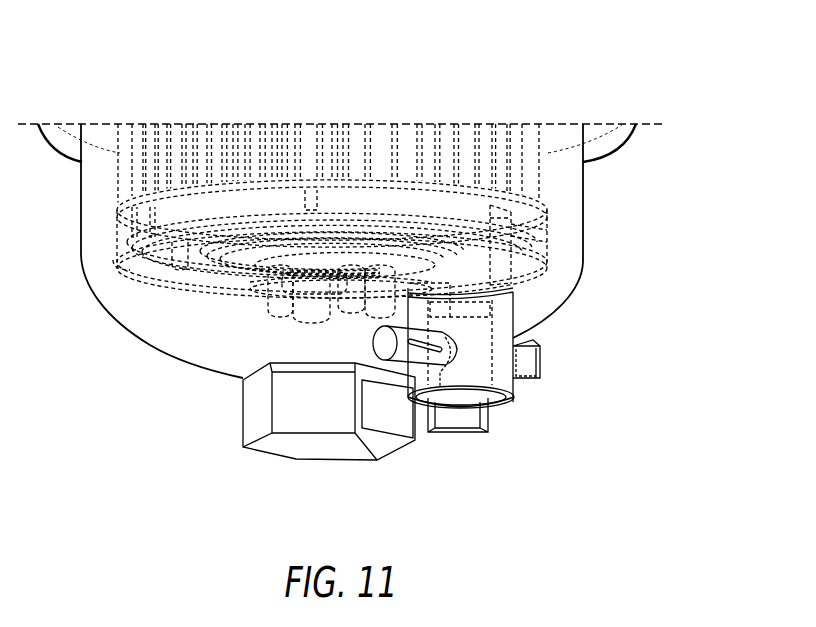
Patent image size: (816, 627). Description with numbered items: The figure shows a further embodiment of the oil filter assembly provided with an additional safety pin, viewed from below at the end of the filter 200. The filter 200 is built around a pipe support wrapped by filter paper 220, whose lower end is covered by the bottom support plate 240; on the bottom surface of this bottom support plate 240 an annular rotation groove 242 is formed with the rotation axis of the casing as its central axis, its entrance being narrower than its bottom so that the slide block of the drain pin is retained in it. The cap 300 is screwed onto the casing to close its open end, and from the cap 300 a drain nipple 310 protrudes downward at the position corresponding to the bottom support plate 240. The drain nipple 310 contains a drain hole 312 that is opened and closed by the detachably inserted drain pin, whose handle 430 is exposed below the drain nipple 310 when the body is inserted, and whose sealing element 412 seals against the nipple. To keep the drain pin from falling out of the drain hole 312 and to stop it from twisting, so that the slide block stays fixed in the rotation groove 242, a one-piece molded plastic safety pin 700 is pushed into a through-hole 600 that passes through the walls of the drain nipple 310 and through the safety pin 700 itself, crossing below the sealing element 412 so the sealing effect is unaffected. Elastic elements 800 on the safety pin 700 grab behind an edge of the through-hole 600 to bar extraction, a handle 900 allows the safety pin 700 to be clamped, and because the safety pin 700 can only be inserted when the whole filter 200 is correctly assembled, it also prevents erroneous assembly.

The filter 200 is at (332, 116).
The filter paper 220 is at (440, 145).
The cap 300 is at (589, 176).
The bottom support plate 240 is at (130, 262).
The rotation groove 242 is at (182, 258).
The sealing element 412 is at (512, 292).
The drain nipple 310 is at (518, 392).
The drain hole 312 is at (430, 404).
The handle 430 is at (483, 417).
The handle 900 is at (543, 357).
The safety pin 700 is at (537, 341).
The through-hole 600 is at (455, 372).
The elastic elements 800 is at (407, 368).